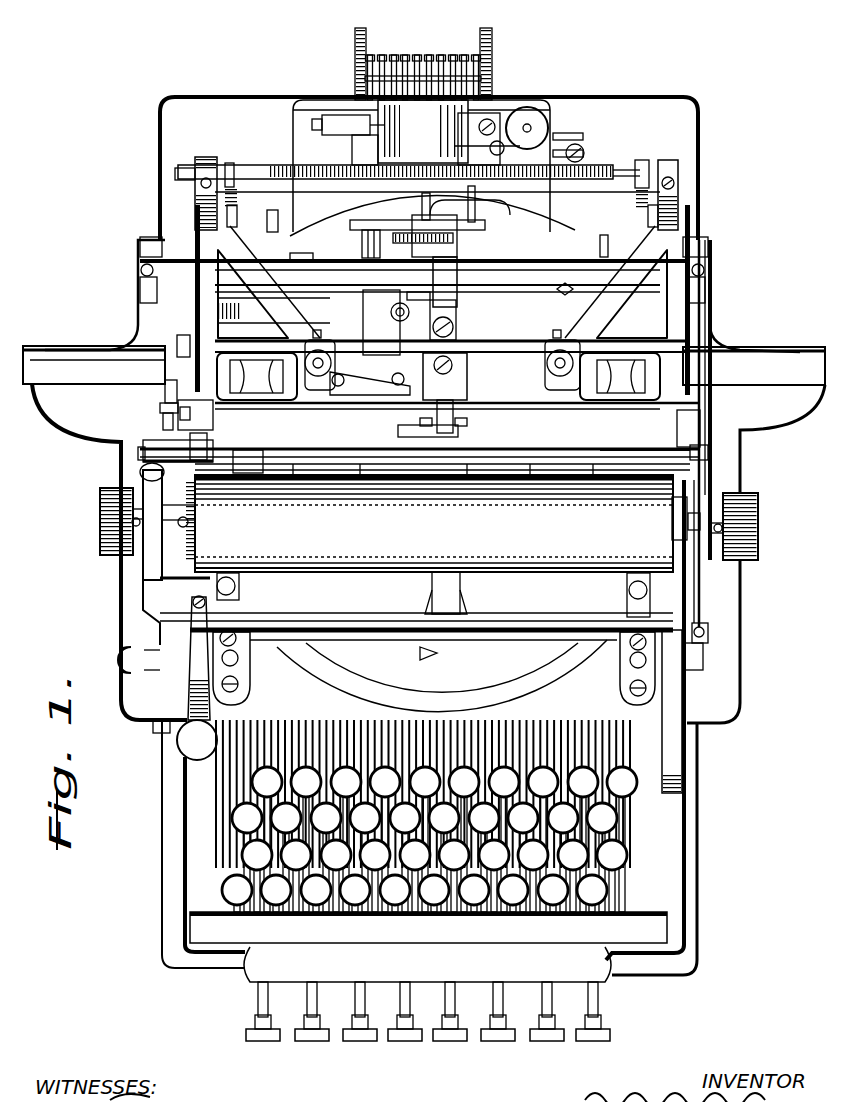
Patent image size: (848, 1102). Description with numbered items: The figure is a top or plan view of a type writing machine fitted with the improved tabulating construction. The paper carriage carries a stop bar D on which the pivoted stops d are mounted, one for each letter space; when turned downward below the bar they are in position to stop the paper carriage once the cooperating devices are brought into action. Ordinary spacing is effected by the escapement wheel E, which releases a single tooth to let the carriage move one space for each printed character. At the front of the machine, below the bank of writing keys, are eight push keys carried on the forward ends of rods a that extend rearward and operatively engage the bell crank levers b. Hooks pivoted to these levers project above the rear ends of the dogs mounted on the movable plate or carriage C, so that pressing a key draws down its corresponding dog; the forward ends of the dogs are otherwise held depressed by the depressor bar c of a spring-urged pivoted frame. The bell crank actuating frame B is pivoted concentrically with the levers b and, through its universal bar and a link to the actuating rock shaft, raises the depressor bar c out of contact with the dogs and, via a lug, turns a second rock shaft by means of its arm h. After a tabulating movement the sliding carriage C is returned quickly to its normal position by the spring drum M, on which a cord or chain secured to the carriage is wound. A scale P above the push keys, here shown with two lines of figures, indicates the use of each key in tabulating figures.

The stop bar D is at (183, 168).
The rods a is at (290, 166).
The movable plate or carriage C is at (383, 157).
The bell crank levers b is at (418, 58).
The actuating frame B is at (480, 70).
The spring drum M is at (527, 107).
The depressor bar c is at (425, 135).
The arm h is at (460, 228).
The stops d is at (590, 188).
The escapement wheel E is at (370, 236).
The scale P is at (600, 962).